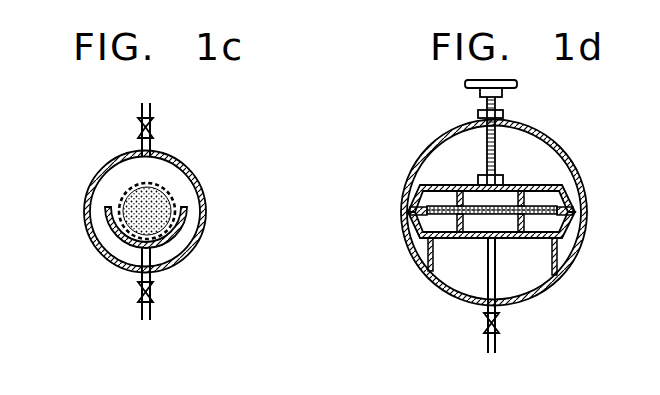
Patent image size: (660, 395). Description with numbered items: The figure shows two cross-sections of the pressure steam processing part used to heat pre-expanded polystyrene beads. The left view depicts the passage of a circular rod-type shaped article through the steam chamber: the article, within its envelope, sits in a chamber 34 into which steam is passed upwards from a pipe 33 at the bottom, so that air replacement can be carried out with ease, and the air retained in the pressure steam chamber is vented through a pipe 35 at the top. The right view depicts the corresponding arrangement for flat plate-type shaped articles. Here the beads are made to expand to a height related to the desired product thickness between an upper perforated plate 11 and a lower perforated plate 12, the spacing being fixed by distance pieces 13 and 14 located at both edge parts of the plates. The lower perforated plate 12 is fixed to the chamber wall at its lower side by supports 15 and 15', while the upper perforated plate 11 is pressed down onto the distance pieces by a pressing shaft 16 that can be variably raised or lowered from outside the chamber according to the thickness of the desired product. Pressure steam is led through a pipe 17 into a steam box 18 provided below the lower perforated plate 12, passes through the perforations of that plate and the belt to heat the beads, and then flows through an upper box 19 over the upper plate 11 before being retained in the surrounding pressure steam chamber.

In FIG. 1d, the upper perforated plate 11 is at (420, 189).
In FIG. 1d, the lower perforated plate 12 is at (418, 232).
In FIG. 1d, the distance piece 13 is at (410, 212).
In FIG. 1d, the distance piece 14 is at (573, 210).
In FIG. 1d, the support 15 is at (434, 284).
In FIG. 1d, the support 15' is at (561, 284).
In FIG. 1d, the pressing shaft 16 is at (498, 155).
In FIG. 1d, the pipe 17 is at (496, 345).
In FIG. 1d, the steam box 18 is at (470, 234).
In FIG. 1d, the upper box 19 is at (472, 195).
In FIG. 1c, the pipe 33 is at (152, 282).
In FIG. 1c, the chamber 34 is at (123, 238).
In FIG. 1c, the pipe 35 is at (152, 143).